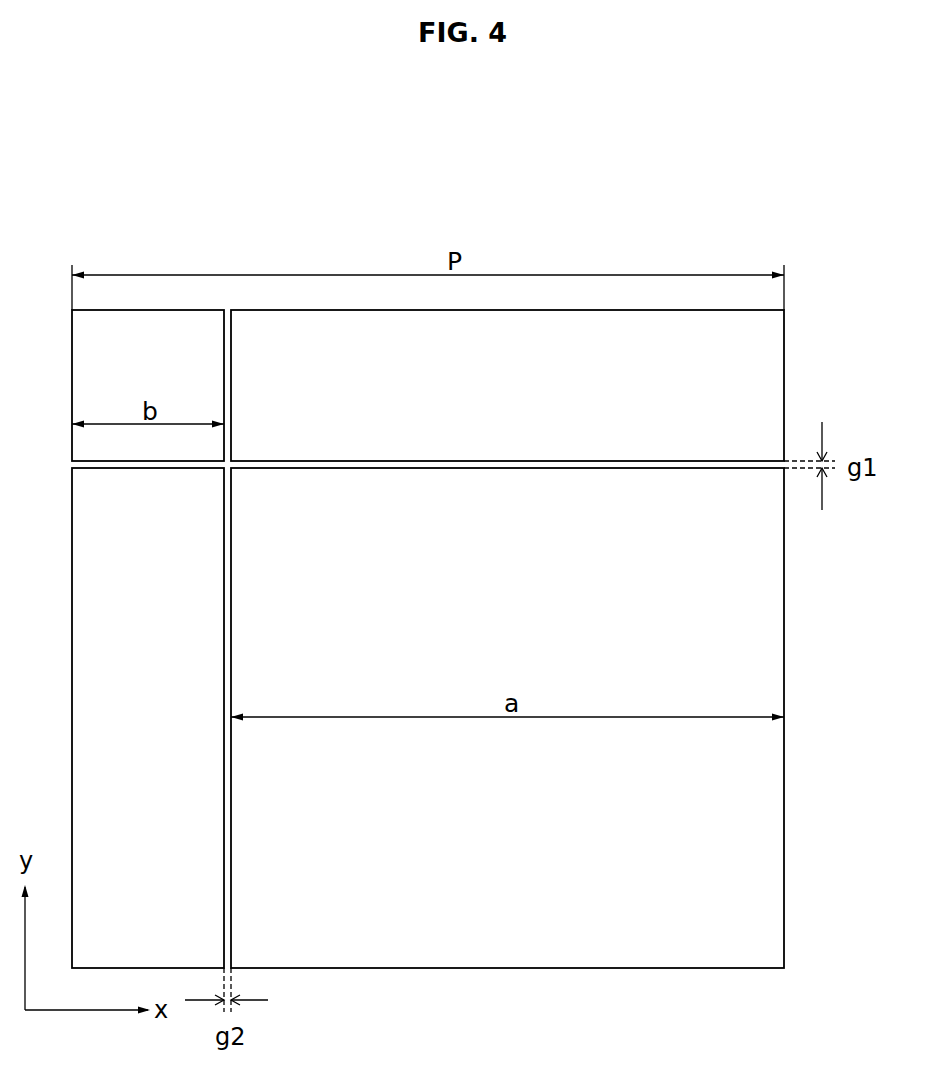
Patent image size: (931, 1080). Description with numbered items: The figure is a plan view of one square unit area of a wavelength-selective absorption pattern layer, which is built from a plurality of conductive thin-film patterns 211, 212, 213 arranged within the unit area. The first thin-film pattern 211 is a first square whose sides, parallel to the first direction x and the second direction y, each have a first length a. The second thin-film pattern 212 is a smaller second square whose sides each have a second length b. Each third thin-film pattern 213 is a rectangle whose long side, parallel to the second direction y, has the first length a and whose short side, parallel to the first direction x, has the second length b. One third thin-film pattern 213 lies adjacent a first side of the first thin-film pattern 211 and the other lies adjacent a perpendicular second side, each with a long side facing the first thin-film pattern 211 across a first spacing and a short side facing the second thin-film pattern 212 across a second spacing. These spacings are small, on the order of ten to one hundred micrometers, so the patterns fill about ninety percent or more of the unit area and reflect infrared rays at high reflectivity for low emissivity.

The first thin-film pattern 211 is at (573, 500).
The second thin-film pattern 212 is at (171, 345).
The third thin-film pattern 213 is at (310, 368).